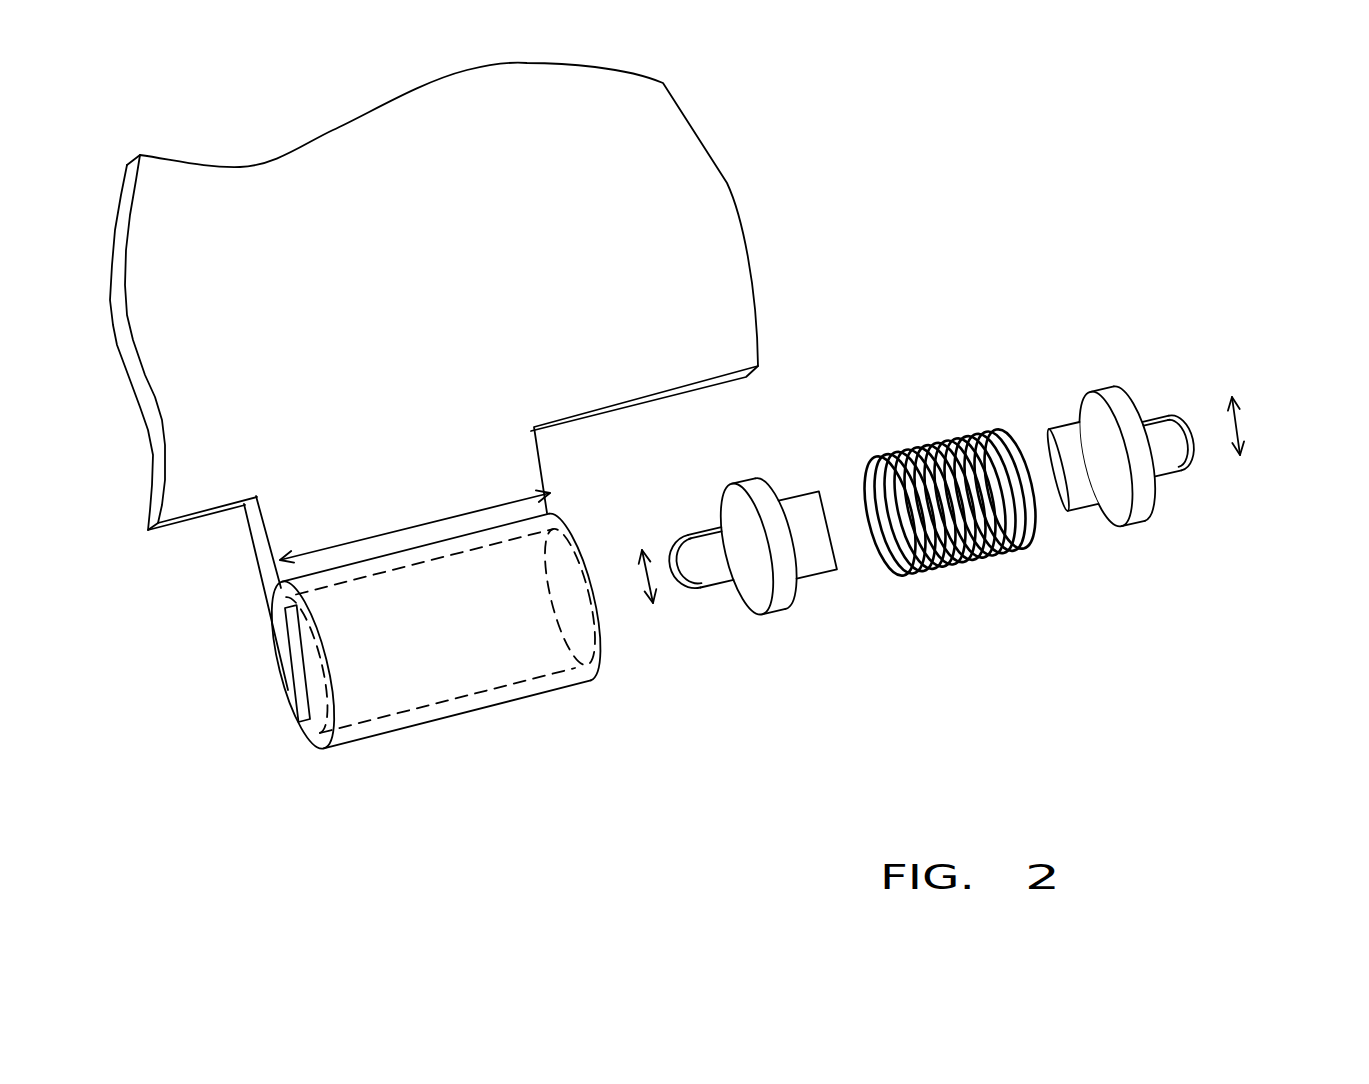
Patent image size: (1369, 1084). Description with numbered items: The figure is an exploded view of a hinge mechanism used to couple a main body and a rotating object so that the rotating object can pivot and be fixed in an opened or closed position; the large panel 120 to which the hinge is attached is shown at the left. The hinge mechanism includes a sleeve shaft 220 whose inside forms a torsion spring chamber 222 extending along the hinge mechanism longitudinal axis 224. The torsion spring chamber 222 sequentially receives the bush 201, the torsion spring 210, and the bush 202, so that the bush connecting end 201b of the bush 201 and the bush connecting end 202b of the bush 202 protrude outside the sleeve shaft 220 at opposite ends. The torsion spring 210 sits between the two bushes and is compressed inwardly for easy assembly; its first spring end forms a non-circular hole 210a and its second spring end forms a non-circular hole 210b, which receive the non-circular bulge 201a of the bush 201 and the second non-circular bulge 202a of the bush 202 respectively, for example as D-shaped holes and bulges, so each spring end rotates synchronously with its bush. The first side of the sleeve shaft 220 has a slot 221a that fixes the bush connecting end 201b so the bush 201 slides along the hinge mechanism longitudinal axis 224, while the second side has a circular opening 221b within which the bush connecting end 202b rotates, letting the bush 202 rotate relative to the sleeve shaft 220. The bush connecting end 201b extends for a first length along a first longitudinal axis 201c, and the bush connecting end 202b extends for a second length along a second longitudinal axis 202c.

The housing 120 is at (693, 218).
The sleeve shaft 220 is at (430, 660).
The slot 221a is at (298, 698).
The circular opening 221b is at (597, 653).
The torsion spring chamber 222 is at (420, 672).
The hinge mechanism longitudinal axis 224 is at (415, 522).
The bush 201 is at (723, 596).
The non-circular bulge 201a is at (790, 497).
The bush connecting end 201b is at (680, 537).
The first longitudinal axis 201c is at (642, 580).
The torsion spring 210 is at (947, 515).
The non-circular hole 210a is at (892, 525).
The non-circular hole 210b is at (1002, 430).
The bush 202 is at (1186, 509).
The second non-circular bulge 202a is at (1087, 510).
The bush connecting end 202b is at (1155, 413).
The second longitudinal axis 202c is at (1243, 437).